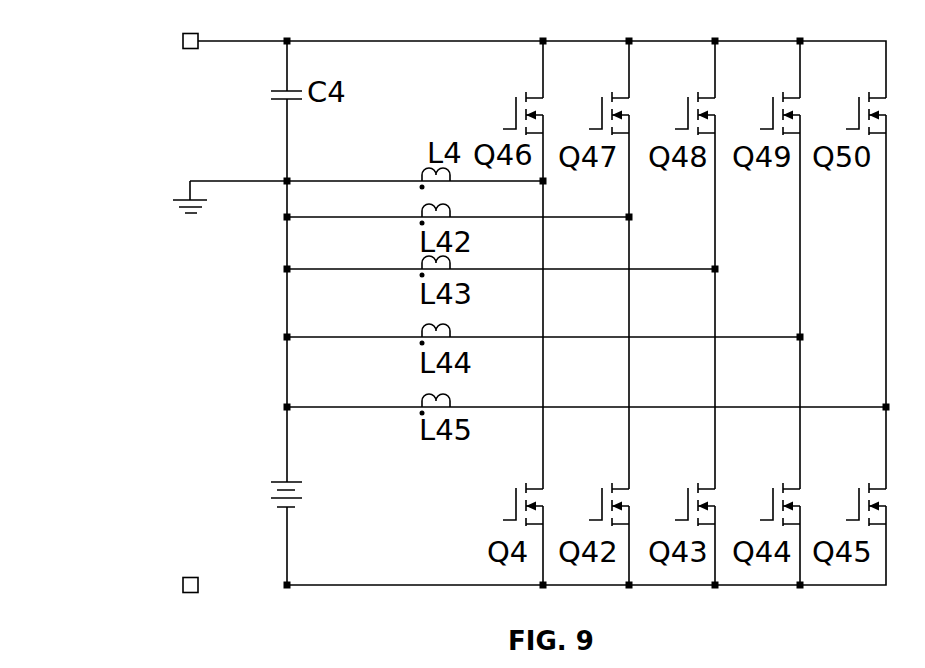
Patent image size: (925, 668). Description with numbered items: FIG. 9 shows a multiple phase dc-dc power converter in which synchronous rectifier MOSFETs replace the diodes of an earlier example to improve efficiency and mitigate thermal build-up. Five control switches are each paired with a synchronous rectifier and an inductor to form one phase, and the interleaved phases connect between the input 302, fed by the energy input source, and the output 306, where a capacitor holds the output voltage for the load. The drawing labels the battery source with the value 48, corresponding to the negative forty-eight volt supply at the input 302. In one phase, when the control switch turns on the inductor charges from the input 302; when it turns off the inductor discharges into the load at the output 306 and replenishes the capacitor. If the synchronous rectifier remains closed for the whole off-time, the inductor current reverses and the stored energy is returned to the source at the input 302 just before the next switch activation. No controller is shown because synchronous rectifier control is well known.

The output 306 is at (192, 33).
The input 302 is at (190, 593).
The battery V2 48 is at (266, 496).